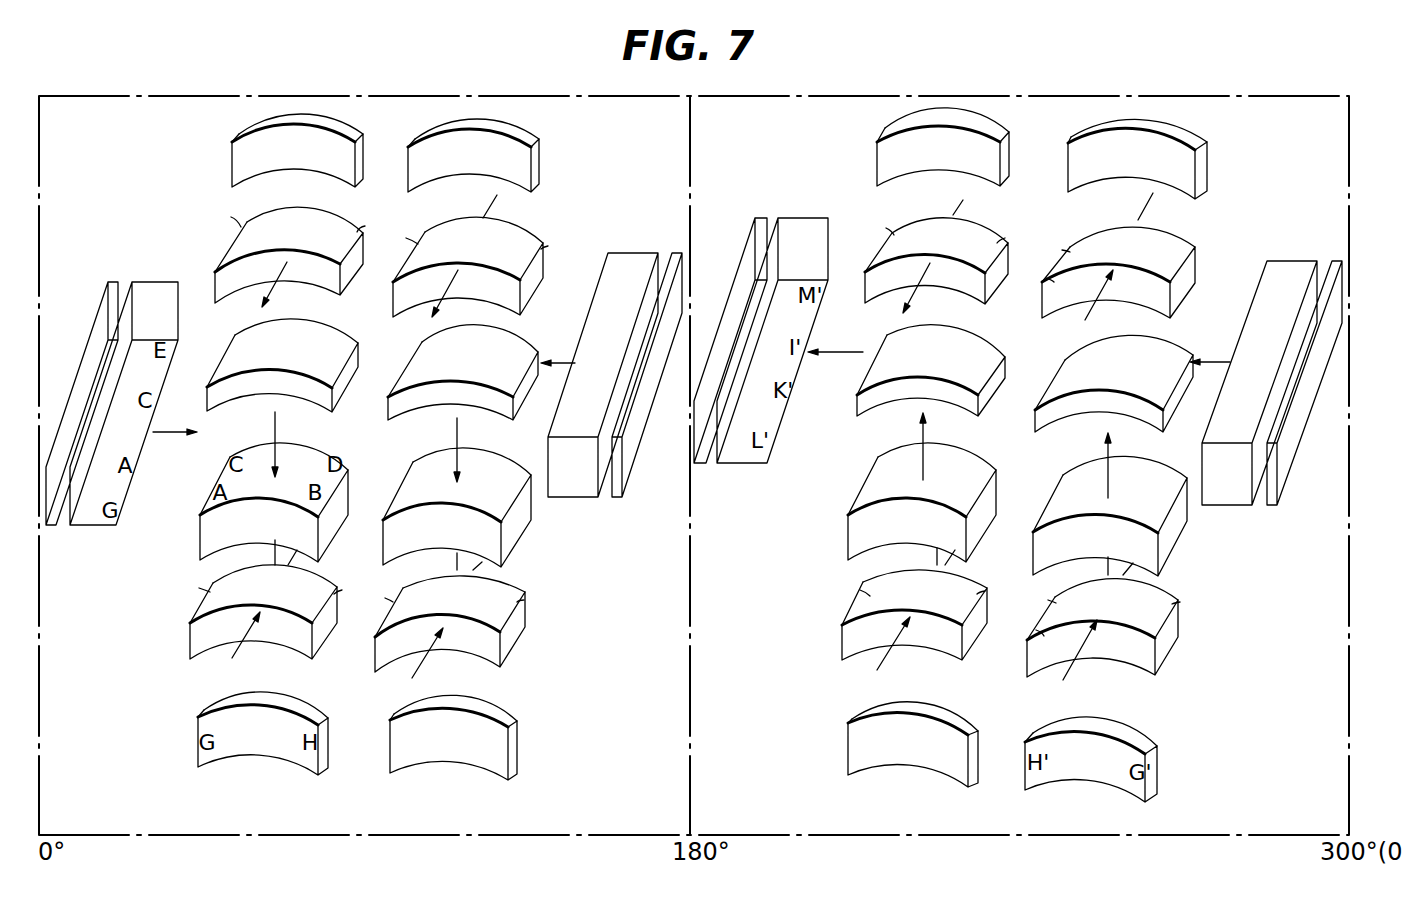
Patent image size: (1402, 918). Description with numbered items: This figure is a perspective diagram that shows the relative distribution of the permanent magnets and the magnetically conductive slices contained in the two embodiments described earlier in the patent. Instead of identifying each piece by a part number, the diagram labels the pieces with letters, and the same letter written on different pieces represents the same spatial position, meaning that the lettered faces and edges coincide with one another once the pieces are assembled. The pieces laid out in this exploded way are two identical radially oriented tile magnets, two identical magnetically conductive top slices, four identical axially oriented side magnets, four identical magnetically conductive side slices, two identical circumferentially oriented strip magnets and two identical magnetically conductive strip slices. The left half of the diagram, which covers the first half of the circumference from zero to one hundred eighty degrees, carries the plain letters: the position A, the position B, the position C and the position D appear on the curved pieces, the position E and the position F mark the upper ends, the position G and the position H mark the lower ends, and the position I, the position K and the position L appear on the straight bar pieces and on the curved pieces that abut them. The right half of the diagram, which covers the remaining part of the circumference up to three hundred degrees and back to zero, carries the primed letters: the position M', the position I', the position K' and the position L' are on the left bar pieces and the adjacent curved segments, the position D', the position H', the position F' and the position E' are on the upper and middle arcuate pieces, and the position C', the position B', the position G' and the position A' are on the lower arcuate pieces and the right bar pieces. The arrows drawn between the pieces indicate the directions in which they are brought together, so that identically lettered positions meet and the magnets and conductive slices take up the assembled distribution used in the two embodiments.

The arcuate magnet segment A-B-C-D A is at (282, 365).
The arcuate magnet segment B-D-I-K B is at (463, 372).
The arcuate segment C-D-E-F C is at (289, 254).
The arcuate segment D-F-I-M D is at (472, 256).
The arcuate plate E-F E is at (297, 150).
The arcuate plate F-M F is at (473, 155).
The arcuate segment A-B-G-H G is at (262, 612).
The arcuate segment B-H-K-L H is at (450, 627).
The arcuate magnet segment D-I-B-K I is at (457, 507).
The rectangular bar M-I-K-L K is at (615, 375).
The arcuate plate H- L is at (453, 737).
The arcuate plate M'-F' M' is at (942, 147).
The arcuate segment M'-I'-D'-F' I' is at (942, 256).
The arcuate magnet segment I'-D'-K'-B' K' is at (931, 370).
The arcuate magnet segment I'-D'-K'-B' D' is at (922, 502).
The arcuate segment K'-B'-L'-H' L' is at (916, 620).
The arcuate plate L'- H' is at (913, 744).
The arcuate plate F'-E' F' is at (1137, 159).
The arcuate segment F'-D'-C'- E' is at (1122, 256).
The arcuate magnet segment D'-C'-B'-A' C' is at (1114, 383).
The arcuate magnet segment D'-C'-B'-A' B' is at (1110, 516).
The arcuate segment B'-A'-H'- G' is at (1108, 629).
The rectangular bar E'-C'-A'-G' A' is at (1272, 383).